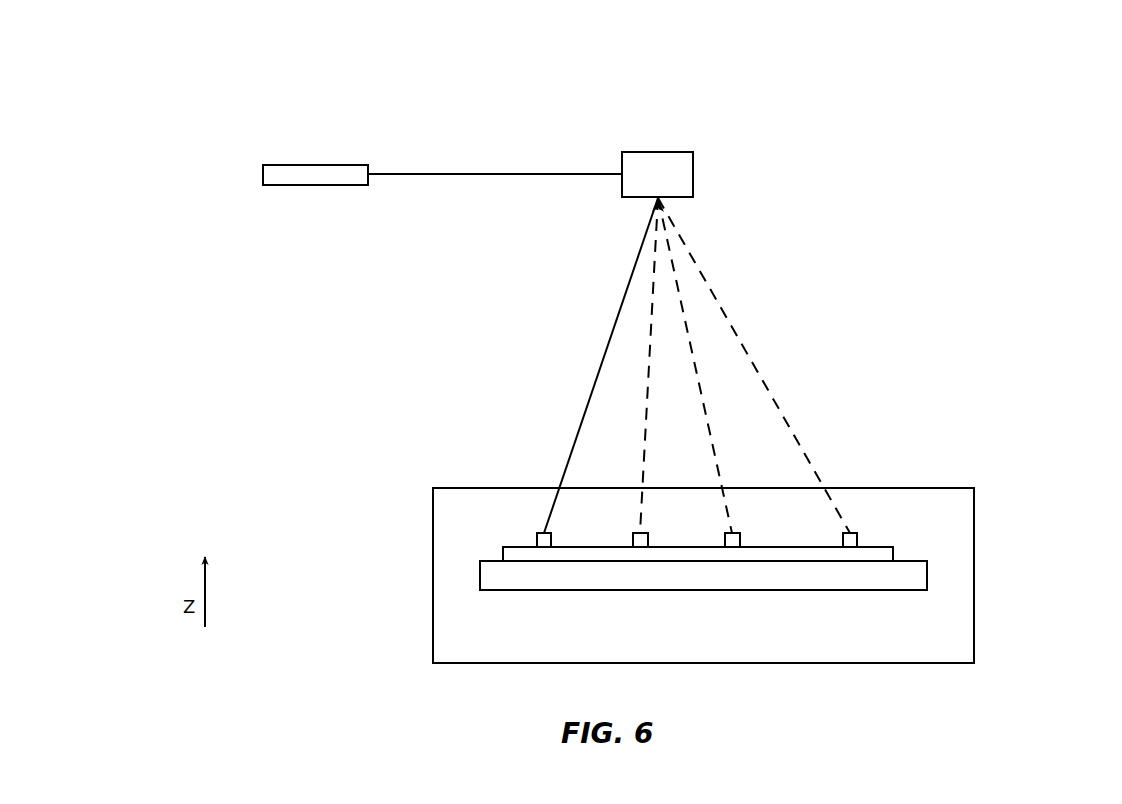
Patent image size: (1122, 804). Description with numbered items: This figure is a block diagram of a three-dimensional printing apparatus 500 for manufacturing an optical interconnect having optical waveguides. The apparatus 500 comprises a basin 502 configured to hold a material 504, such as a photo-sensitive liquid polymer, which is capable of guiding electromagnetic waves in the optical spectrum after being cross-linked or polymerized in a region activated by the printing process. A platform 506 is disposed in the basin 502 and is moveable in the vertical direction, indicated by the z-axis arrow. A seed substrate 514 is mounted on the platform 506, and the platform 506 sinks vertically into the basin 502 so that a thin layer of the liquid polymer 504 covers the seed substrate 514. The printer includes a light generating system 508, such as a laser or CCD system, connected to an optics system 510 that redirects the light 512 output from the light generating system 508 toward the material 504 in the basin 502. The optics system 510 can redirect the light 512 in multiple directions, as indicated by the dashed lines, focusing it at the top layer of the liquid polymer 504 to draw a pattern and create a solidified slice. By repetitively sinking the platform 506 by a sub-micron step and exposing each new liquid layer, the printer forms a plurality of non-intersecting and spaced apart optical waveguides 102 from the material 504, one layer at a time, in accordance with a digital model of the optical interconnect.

The 3D printing apparatus 500 is at (228, 85).
The basin 502 is at (975, 623).
The material 504 is at (512, 503).
The platform 506 is at (927, 575).
The light generating system 508 is at (315, 186).
The optics system 510 is at (693, 170).
The light 512 is at (495, 160).
The seed substrate 514 is at (895, 553).
The optical waveguides 102 is at (537, 538).